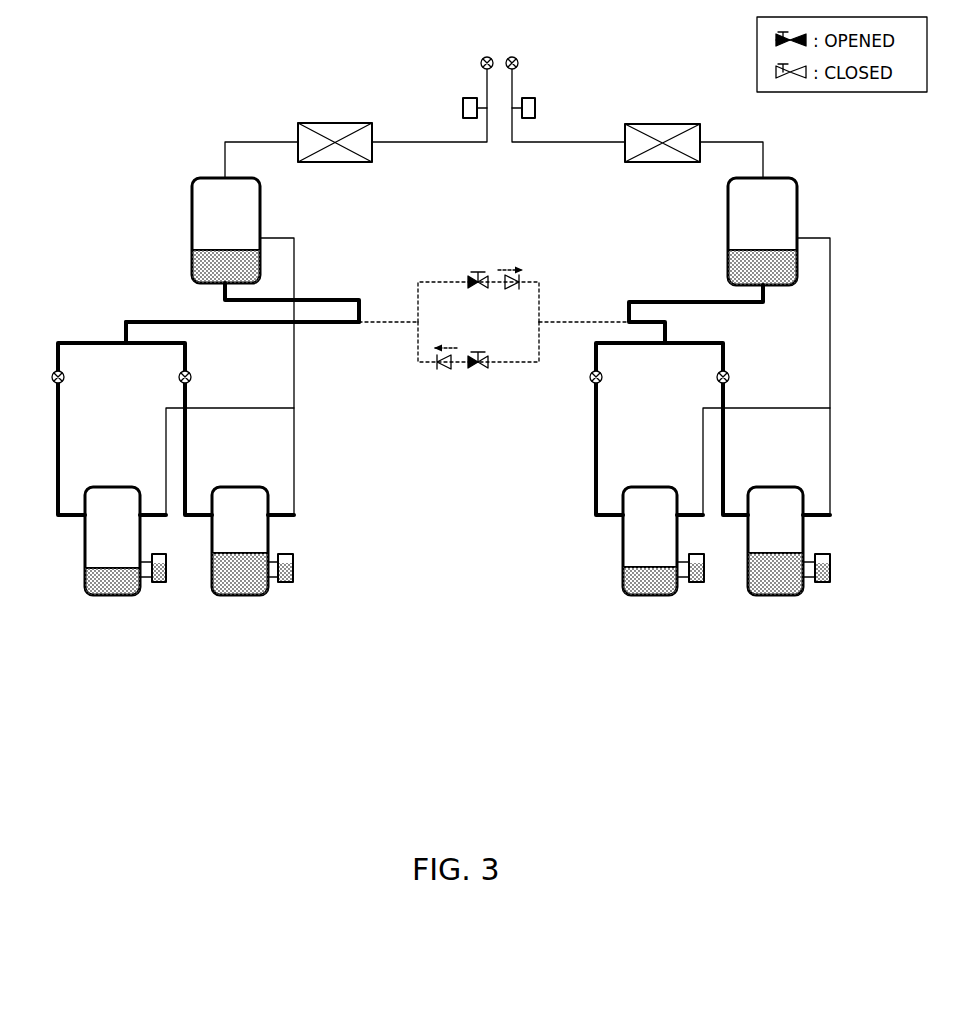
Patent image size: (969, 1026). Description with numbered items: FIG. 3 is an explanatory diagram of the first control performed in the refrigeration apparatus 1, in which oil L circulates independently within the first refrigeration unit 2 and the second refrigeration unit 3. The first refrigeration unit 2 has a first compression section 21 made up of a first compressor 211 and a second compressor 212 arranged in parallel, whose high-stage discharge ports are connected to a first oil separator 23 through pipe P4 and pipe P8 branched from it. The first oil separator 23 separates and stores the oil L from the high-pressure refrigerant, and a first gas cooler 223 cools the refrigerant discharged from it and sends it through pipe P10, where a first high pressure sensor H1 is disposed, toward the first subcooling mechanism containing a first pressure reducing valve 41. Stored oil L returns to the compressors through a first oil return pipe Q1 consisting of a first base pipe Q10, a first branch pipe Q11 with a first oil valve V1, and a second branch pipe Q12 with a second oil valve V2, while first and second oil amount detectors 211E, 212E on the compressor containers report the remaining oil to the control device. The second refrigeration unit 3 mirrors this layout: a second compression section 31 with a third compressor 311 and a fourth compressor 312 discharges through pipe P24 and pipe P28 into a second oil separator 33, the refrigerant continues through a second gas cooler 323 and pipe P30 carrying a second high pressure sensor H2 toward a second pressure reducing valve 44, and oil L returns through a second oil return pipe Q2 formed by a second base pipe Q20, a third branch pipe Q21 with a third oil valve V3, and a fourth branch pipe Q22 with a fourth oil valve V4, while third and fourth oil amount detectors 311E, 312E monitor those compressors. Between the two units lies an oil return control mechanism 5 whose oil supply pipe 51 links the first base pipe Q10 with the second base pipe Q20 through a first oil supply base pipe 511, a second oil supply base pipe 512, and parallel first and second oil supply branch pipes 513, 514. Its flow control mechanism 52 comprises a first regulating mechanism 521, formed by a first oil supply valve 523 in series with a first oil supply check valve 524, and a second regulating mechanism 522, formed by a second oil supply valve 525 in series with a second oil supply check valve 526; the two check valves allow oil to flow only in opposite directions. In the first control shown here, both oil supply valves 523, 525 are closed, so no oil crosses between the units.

The refrigeration apparatus 1 is at (95, 80).
The first refrigeration unit 2 is at (130, 180).
The second refrigeration unit 3 is at (835, 183).
The oil return control mechanism 5 is at (481, 232).
The first compression section 21 is at (78, 596).
The first oil separator 23 is at (200, 178).
The second compression section 31 is at (615, 596).
The second oil separator 33 is at (790, 178).
The first pressure reducing valve 41 is at (481, 63).
The second pressure reducing valve 44 is at (518, 63).
The oil supply pipe 51 is at (397, 337).
The flow control mechanism 52 is at (540, 272).
The first compressor 211 is at (100, 487).
The second compressor 212 is at (228, 487).
The first oil amount detector 211E is at (160, 585).
The second oil amount detector 212E is at (287, 585).
The first gas cooler 223 is at (338, 123).
The third compressor 311 is at (637, 487).
The fourth compressor 312 is at (762, 487).
The third oil amount detector 311E is at (697, 585).
The fourth oil amount detector 312E is at (823, 585).
The second gas cooler 323 is at (663, 124).
The first oil supply base pipe 511 is at (383, 322).
The second oil supply base pipe 512 is at (592, 322).
The first oil supply branch pipe 513 is at (420, 282).
The second oil supply branch pipe 514 is at (425, 364).
The first regulating mechanism 521 is at (465, 272).
The second regulating mechanism 522 is at (472, 386).
The first oil supply valve 523 is at (462, 294).
The first oil supply check valve 524 is at (522, 292).
The second oil supply valve 525 is at (485, 372).
The second oil supply check valve 526 is at (443, 372).
The first high pressure sensor H1 is at (463, 108).
The second high pressure sensor H2 is at (535, 108).
The oil L is at (205, 265).
The pipe P4 is at (166, 425).
The pipe P8 is at (294, 458).
The pipe P10 is at (400, 142).
The pipe P24 is at (703, 425).
The pipe P28 is at (830, 458).
The pipe P30 is at (608, 142).
The first oil return pipe Q1 is at (128, 307).
The second oil return pipe Q2 is at (735, 338).
The first base pipe Q10 is at (255, 327).
The first branch pipe Q11 is at (70, 343).
The second branch pipe Q12 is at (155, 335).
The second base pipe Q20 is at (643, 300).
The third branch pipe Q21 is at (594, 375).
The fourth branch pipe Q22 is at (725, 352).
The first oil valve V1 is at (66, 377).
The second oil valve V2 is at (193, 377).
The third oil valve V3 is at (604, 377).
The fourth oil valve V4 is at (731, 377).